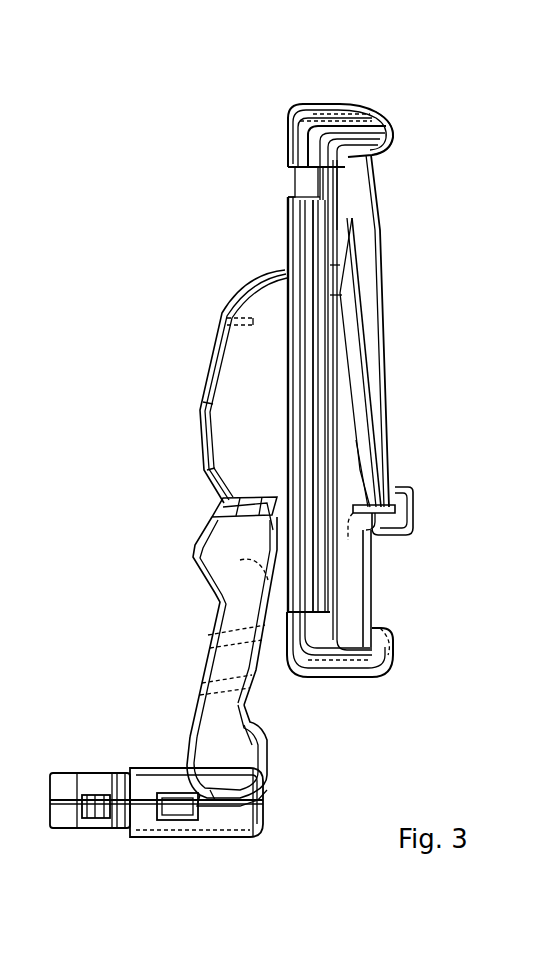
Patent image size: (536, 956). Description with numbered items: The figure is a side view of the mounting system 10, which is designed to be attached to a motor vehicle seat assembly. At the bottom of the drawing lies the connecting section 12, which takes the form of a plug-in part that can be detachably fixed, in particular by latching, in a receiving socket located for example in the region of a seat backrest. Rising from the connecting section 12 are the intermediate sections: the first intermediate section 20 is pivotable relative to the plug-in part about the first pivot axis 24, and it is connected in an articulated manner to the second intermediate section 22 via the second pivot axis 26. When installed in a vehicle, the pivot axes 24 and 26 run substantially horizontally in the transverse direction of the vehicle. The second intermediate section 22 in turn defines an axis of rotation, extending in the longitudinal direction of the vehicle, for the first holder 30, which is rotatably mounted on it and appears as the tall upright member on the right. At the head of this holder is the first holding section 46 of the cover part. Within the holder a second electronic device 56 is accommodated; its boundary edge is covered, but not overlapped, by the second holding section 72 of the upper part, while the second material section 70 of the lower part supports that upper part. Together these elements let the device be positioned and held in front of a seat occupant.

The mounting system 10 is at (459, 134).
The connecting section 12 is at (259, 846).
The first intermediate section 20 is at (233, 760).
The second intermediate section 22 is at (227, 372).
The first pivot axis 24 is at (227, 758).
The second pivot axis 26 is at (232, 552).
The first holder 30 is at (262, 149).
The first holding section 46 is at (387, 120).
The second electronic device 56 is at (373, 367).
The second material section 70 is at (330, 318).
The second holding section 72 is at (355, 145).